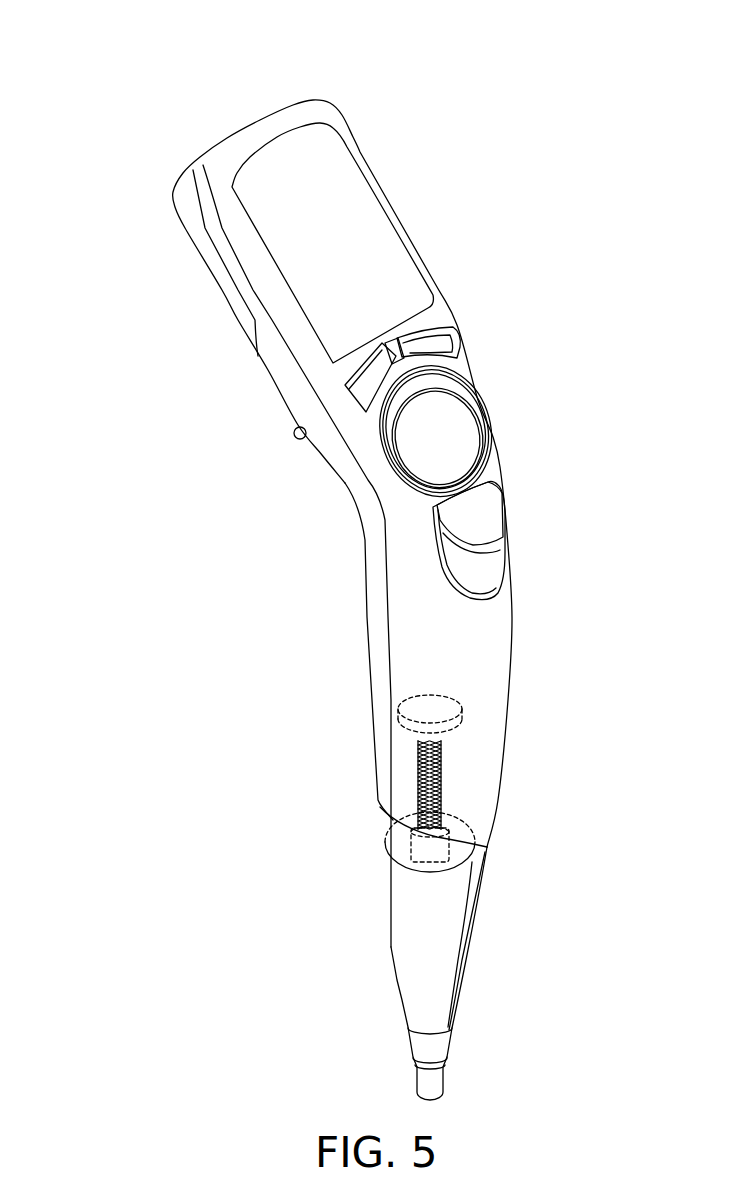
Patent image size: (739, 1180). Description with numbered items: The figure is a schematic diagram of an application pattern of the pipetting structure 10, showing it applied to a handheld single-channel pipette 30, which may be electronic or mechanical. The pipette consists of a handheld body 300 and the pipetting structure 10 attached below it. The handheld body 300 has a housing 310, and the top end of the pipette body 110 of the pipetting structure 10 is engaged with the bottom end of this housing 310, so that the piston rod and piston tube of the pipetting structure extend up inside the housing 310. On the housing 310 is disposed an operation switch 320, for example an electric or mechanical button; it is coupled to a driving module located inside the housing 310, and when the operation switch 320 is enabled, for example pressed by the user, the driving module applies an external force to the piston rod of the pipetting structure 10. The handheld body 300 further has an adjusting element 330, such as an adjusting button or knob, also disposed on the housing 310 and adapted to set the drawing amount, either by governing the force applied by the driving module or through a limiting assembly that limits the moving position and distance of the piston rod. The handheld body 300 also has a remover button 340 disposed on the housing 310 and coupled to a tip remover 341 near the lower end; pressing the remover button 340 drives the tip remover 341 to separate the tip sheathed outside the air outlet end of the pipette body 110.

The handheld single-channel pipette 30 is at (126, 72).
The handheld body 300 is at (576, 266).
The housing 310 is at (437, 296).
The operation switch 320 is at (458, 432).
The adjusting element 330 is at (455, 331).
The remover button 340 is at (483, 513).
The tip remover 341 is at (488, 878).
The pipetting structure 10 is at (424, 715).
The pipette body 110 is at (400, 968).